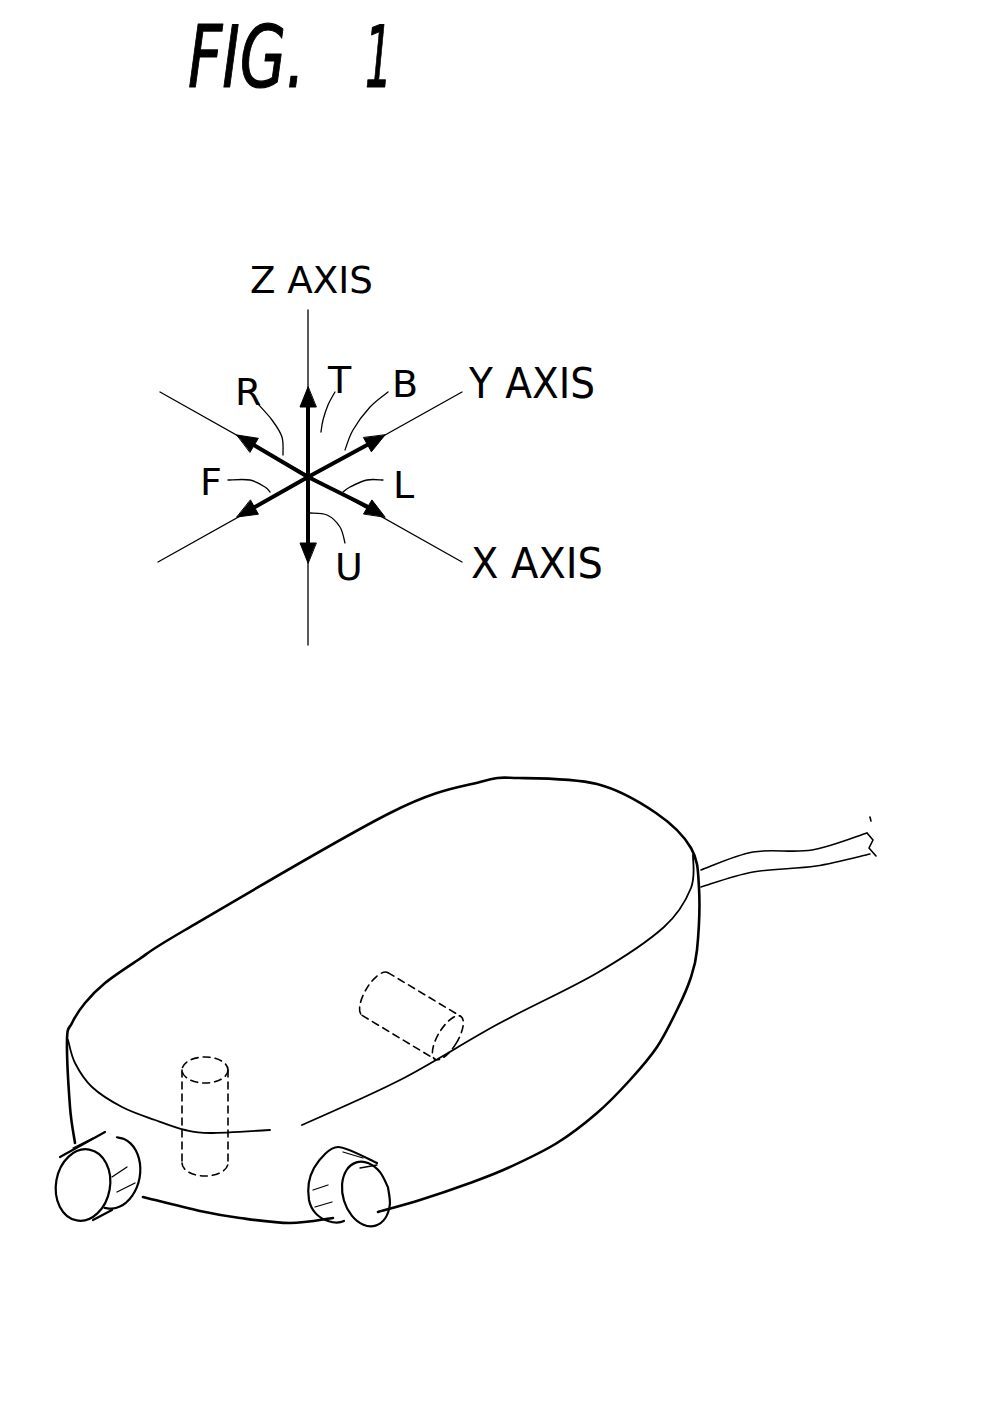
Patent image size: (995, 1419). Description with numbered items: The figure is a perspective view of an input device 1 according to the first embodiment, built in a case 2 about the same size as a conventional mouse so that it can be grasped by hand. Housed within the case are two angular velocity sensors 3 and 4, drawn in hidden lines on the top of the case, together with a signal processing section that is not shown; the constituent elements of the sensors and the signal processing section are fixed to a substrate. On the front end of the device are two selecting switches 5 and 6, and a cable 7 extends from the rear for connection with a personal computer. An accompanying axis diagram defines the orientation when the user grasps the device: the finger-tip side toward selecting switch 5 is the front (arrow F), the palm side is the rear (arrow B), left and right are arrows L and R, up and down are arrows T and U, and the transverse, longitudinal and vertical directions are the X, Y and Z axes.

The input device 1 is at (190, 870).
The housing top surface 2 is at (593, 821).
The angular velocity sensor 3 is at (230, 1093).
The angular velocity sensor 4 is at (418, 997).
The selecting switch 5 is at (127, 1188).
The selecting switch 6 is at (367, 1207).
The cable 7 is at (789, 860).